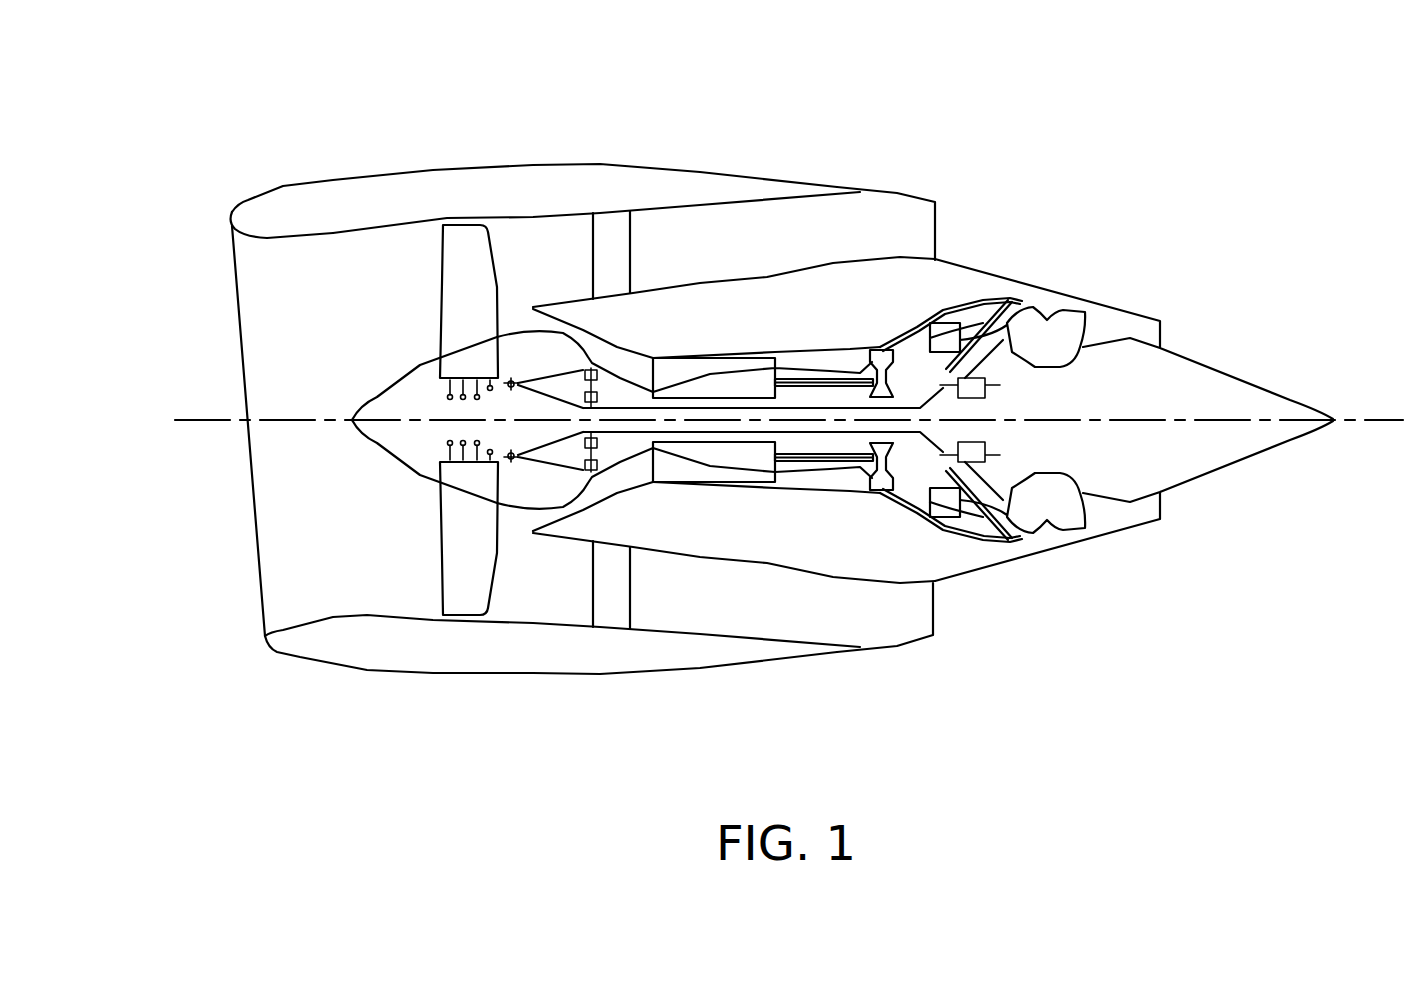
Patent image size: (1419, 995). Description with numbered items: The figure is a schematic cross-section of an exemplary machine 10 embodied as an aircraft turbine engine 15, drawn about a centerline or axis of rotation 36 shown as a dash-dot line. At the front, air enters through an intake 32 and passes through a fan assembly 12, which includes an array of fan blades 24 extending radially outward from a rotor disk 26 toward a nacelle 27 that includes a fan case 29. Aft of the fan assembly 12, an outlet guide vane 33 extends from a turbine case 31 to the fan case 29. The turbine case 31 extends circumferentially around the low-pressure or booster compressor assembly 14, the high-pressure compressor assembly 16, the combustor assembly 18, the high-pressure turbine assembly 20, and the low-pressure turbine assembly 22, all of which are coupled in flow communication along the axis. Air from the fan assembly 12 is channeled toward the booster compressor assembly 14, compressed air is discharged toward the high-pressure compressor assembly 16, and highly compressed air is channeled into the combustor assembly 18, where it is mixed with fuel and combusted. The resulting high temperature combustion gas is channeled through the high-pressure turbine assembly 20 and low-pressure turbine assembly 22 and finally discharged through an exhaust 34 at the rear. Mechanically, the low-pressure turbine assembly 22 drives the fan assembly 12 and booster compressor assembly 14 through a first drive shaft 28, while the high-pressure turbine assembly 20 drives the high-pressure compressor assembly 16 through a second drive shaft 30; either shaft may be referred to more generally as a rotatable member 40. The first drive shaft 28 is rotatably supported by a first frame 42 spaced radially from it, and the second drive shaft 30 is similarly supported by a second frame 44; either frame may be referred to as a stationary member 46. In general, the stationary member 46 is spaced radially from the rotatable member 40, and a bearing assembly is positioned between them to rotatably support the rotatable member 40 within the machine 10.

The machine 10 is at (1213, 108).
The fan assembly 12 is at (427, 278).
The low-pressure or booster compressor assembly 14 is at (537, 298).
The aircraft turbine engine 15 is at (923, 180).
The high-pressure compressor assembly 16 is at (692, 360).
The combustor assembly 18 is at (815, 345).
The high-pressure turbine assembly 20 is at (883, 344).
The low-pressure turbine assembly 22 is at (983, 294).
The fan blades 24 is at (451, 314).
The rotor disk 26 is at (398, 410).
The nacelle 27 is at (337, 192).
The first drive shaft 28 is at (633, 407).
The fan case 29 is at (440, 213).
The second drive shaft 30 is at (823, 385).
The turbine case 31 is at (853, 267).
The intake 32 is at (205, 278).
The outlet guide vane 33 is at (613, 233).
The exhaust 34 is at (1168, 330).
The centerline or axis of rotation 36 is at (1373, 417).
The rotatable member 40 is at (797, 467).
The first frame 42 is at (1020, 300).
The second frame 44 is at (900, 500).
The stationary member 46 is at (950, 505).